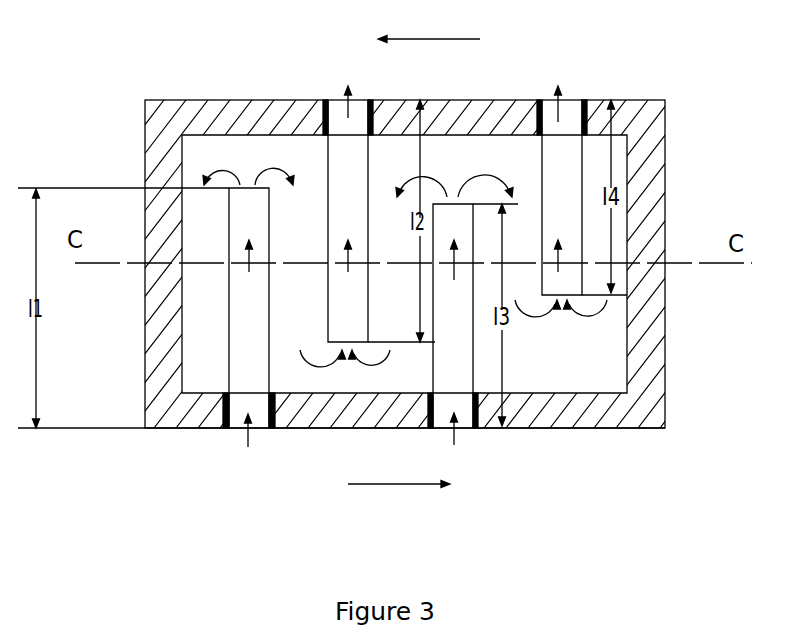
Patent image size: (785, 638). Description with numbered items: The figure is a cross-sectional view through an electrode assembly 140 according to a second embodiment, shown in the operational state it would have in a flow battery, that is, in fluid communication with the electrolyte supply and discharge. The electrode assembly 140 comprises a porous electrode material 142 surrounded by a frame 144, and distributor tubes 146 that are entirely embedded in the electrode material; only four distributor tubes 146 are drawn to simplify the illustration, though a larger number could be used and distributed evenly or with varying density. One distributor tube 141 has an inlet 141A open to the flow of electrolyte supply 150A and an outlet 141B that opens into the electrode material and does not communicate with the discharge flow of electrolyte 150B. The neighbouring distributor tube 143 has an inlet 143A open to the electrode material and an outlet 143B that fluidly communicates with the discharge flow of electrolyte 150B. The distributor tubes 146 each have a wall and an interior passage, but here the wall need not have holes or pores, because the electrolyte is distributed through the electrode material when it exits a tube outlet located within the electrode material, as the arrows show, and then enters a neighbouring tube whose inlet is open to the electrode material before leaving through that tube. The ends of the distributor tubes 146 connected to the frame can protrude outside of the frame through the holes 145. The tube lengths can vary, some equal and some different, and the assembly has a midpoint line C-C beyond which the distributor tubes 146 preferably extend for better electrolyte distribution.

The electrode assembly 140 is at (610, 57).
The distributor tube 141 is at (230, 313).
The inlet 141A is at (238, 430).
The outlet 141B is at (203, 183).
The porous electrode material 142 is at (454, 163).
The distributor tube 143 is at (327, 178).
The inlet 143A is at (358, 348).
The outlet 143B is at (337, 98).
The frame 144 is at (163, 378).
The holes 145 is at (220, 427).
The distributor tubes 146 is at (473, 357).
The electrolyte supply 150A is at (399, 504).
The discharge flow of electrolyte 150B is at (429, 22).